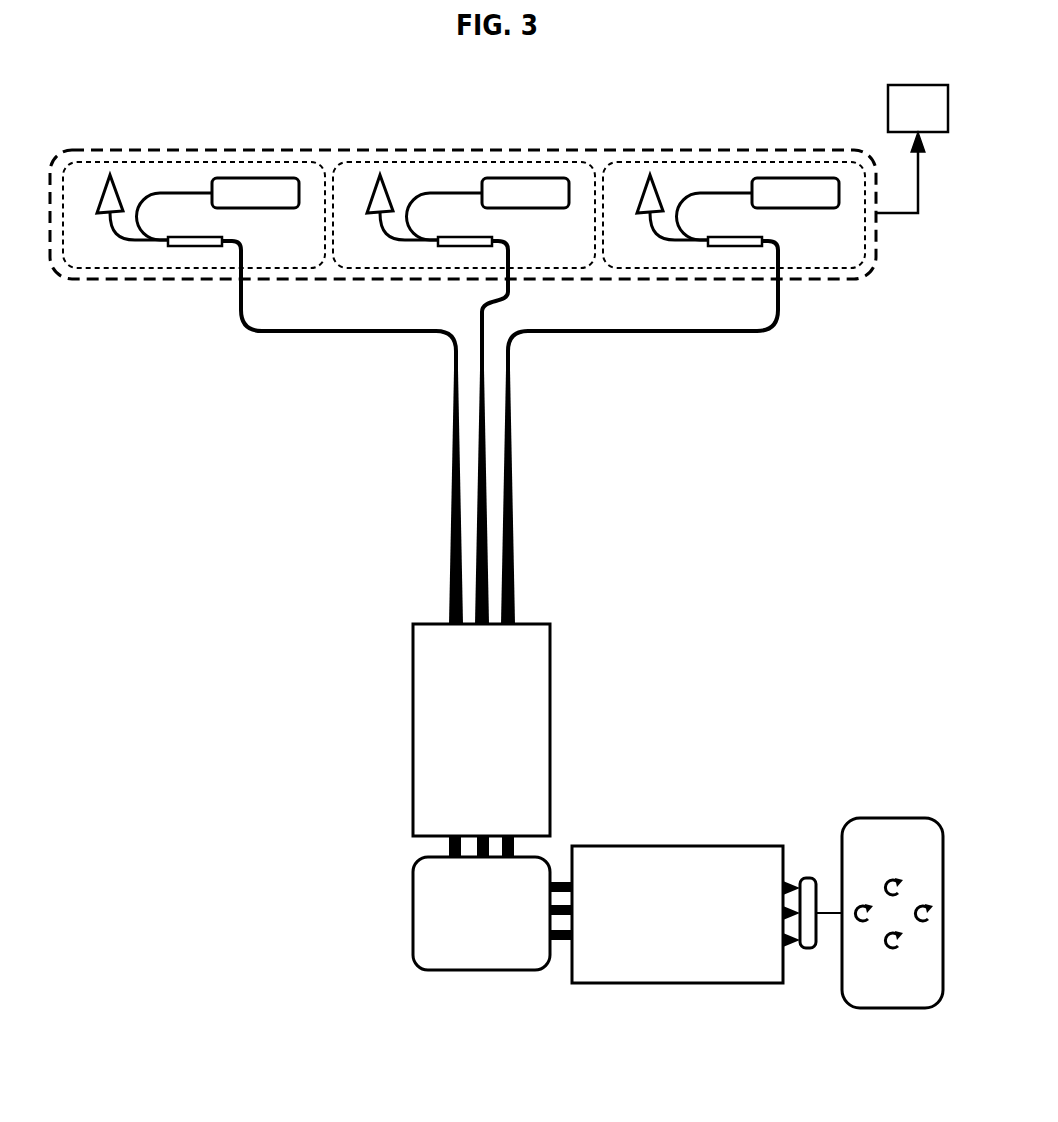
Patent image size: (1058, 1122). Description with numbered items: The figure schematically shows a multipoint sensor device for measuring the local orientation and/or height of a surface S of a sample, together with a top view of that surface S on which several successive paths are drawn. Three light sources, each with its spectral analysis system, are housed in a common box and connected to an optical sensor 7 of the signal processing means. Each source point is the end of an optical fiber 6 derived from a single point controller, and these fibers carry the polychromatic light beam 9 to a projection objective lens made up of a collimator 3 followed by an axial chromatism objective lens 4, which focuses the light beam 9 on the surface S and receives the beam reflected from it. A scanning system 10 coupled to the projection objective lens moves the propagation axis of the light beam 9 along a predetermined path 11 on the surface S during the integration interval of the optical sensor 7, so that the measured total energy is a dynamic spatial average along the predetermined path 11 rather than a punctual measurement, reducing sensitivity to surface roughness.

The collimator 3 is at (475, 741).
The axial chromatism objective lens 4 is at (670, 924).
The optical fiber 6 is at (642, 333).
The optical sensor 7 is at (912, 118).
The light beam 9 is at (458, 537).
The scanning system 10 is at (470, 923).
The predetermined path 11 is at (932, 884).
The surface of the sample S is at (809, 870).